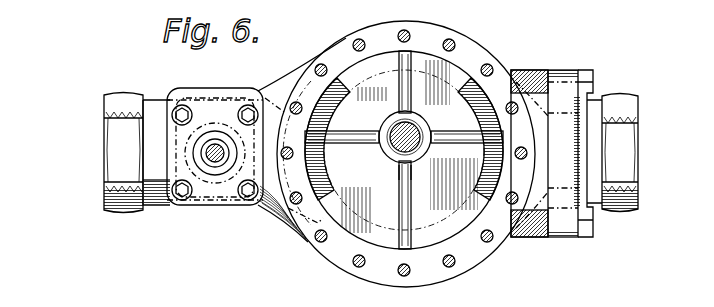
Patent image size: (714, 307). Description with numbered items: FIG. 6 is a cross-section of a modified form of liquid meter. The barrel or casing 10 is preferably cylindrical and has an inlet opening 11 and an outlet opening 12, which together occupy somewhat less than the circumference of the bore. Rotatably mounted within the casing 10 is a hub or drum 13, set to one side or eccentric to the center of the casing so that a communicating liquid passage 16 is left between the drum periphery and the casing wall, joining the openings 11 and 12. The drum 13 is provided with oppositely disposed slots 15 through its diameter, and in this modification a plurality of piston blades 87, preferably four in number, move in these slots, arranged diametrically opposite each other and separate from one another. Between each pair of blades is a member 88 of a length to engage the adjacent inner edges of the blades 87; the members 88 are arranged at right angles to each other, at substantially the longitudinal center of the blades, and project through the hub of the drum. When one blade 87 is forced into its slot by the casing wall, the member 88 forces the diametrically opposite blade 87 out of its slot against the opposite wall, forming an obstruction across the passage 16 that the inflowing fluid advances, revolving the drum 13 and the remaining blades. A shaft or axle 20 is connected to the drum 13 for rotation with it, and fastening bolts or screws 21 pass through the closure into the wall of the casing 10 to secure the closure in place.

The barrel or casing 10 is at (375, 33).
The inlet opening 11 is at (633, 167).
The outlet opening 12 is at (104, 163).
The hub or drum 13 is at (460, 83).
The slot 15 is at (399, 175).
The liquid passage 16 is at (462, 222).
The shaft or axle 20 is at (409, 141).
The fastening bolts or screws 21 is at (448, 40).
The piston blades 87 is at (404, 81).
The member 88 is at (425, 132).